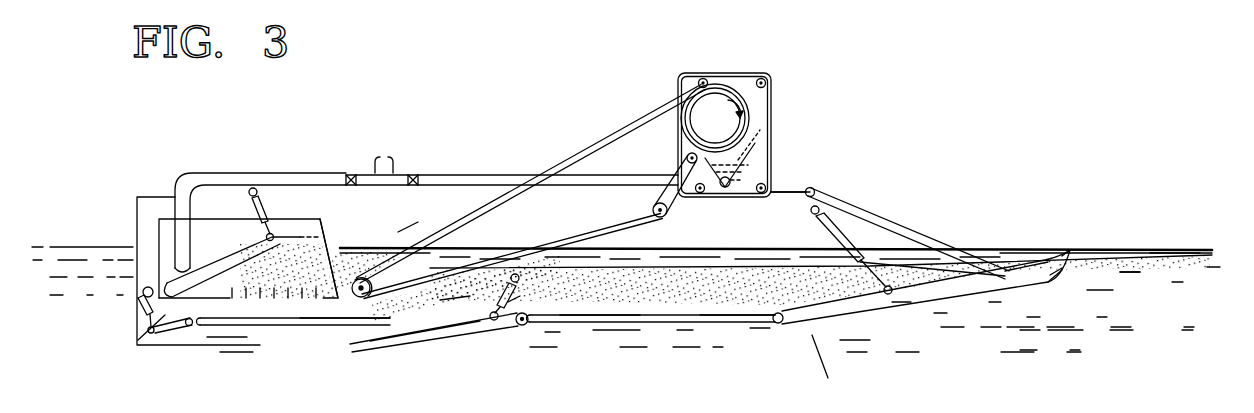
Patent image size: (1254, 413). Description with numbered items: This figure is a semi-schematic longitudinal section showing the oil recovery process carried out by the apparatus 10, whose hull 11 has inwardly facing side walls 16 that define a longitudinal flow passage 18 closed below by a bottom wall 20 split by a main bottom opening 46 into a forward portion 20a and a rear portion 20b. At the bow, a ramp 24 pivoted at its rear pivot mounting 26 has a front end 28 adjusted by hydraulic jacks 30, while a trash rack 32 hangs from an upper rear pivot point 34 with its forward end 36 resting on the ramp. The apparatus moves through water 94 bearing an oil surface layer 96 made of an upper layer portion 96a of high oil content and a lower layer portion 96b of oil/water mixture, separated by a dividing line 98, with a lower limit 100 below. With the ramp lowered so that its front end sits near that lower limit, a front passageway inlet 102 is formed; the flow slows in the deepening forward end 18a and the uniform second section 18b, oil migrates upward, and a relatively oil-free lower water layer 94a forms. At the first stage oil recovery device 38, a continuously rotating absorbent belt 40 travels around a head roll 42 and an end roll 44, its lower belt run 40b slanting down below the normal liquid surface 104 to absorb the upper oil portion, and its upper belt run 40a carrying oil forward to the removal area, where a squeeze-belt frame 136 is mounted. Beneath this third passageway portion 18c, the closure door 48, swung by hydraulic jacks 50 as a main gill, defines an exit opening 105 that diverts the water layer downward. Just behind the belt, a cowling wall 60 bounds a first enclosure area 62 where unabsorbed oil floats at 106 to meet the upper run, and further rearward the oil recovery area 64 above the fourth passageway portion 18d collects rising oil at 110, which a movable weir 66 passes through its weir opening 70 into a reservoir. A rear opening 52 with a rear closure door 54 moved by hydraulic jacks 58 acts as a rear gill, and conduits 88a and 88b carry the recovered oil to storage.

The apparatus 10 is at (846, 106).
The hull 11 is at (833, 366).
The side wall 16 is at (740, 224).
The longitudinal flow passage 18 is at (778, 237).
The forward end of passageway 18a is at (905, 265).
The second passageway section 18b is at (625, 287).
The third passageway portion 18c is at (450, 292).
The fourth passageway portion 18d is at (265, 313).
The bottom wall 20 is at (663, 322).
The forward bottom wall portion 20a is at (728, 318).
The rear bottom wall portion 20b is at (298, 320).
The bow ramp 24 is at (944, 293).
The rear pivot mounting 26 is at (778, 325).
The front end of ramp 28 is at (1070, 270).
The hydraulic jacks 30 is at (837, 230).
The trash rack 32 is at (932, 237).
The upper rear pivot point 34 is at (814, 190).
The forward end of trash rack 36 is at (1017, 263).
The first stage oil recovery device 38 is at (545, 154).
The belt 40 is at (531, 190).
The upper belt run 40a is at (490, 203).
The lower belt run 40b is at (624, 232).
The head roll 42 is at (712, 110).
The end roll 44 is at (360, 297).
The main bottom opening 46 is at (402, 322).
The closure door 48 is at (480, 337).
The hydraulic jacks 50 is at (512, 300).
The rear opening 52 is at (163, 330).
The rear closure door 54 is at (188, 328).
The hydraulic jacks 58 is at (137, 308).
The cowling wall 60 is at (337, 277).
The first enclosure area 62 is at (395, 233).
The oil recovery area 64 is at (248, 270).
The weir 66 is at (250, 270).
The weir opening 70 is at (302, 233).
The conduit 88a is at (590, 183).
The conduit 88b is at (177, 240).
The water 94 is at (1104, 317).
The lower water layer 94a is at (607, 310).
The oil surface layer 96 is at (1123, 248).
The upper layer portion 96a is at (1165, 252).
The lower layer portion 96b is at (1183, 267).
The dividing line 98 is at (1063, 268).
The lower limit 100 is at (1143, 268).
The front passageway inlet 102 is at (1063, 262).
The normal liquid surface 104 is at (652, 247).
The exit opening 105 is at (398, 342).
The floating oil 106 is at (365, 243).
The collected oil 110 is at (322, 240).
The frame 136 is at (772, 120).